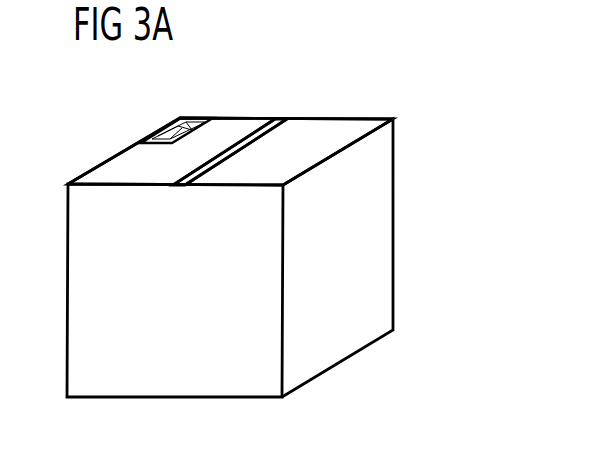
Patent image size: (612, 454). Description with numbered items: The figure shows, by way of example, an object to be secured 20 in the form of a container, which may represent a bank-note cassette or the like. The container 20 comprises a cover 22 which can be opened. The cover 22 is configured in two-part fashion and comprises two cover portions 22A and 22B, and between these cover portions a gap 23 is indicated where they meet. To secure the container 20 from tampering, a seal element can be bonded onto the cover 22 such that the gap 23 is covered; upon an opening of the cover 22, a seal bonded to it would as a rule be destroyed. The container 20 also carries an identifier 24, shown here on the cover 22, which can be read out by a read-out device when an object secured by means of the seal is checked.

The object to be secured 20 is at (394, 240).
The cover 22 is at (129, 161).
The cover portion 22A is at (345, 124).
The cover portion 22B is at (228, 126).
The gap 23 is at (276, 124).
The identifier 24 is at (163, 127).